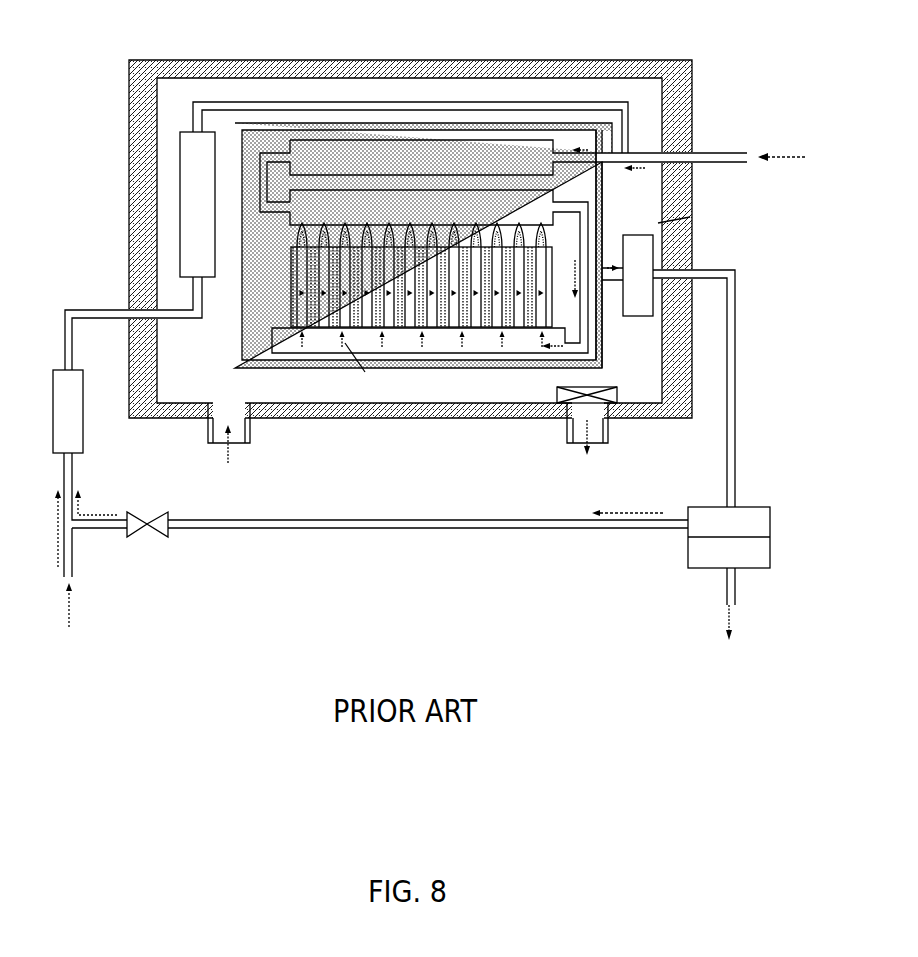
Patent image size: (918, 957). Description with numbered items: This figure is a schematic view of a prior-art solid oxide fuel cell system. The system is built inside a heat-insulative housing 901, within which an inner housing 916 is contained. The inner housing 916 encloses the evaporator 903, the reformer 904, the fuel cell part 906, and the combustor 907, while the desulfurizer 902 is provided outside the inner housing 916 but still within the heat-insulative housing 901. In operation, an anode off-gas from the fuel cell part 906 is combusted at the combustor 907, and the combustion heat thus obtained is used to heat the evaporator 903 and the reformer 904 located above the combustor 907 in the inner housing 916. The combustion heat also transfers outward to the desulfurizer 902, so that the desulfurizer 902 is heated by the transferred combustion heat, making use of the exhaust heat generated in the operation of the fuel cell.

The heat-insulative housing 901 is at (128, 92).
The desulfurizer 902 is at (180, 187).
The evaporator 903 is at (320, 140).
The reformer 904 is at (430, 281).
The fuel cell part 906 is at (280, 312).
The combustor 907 is at (290, 236).
The inner housing 916 is at (558, 125).